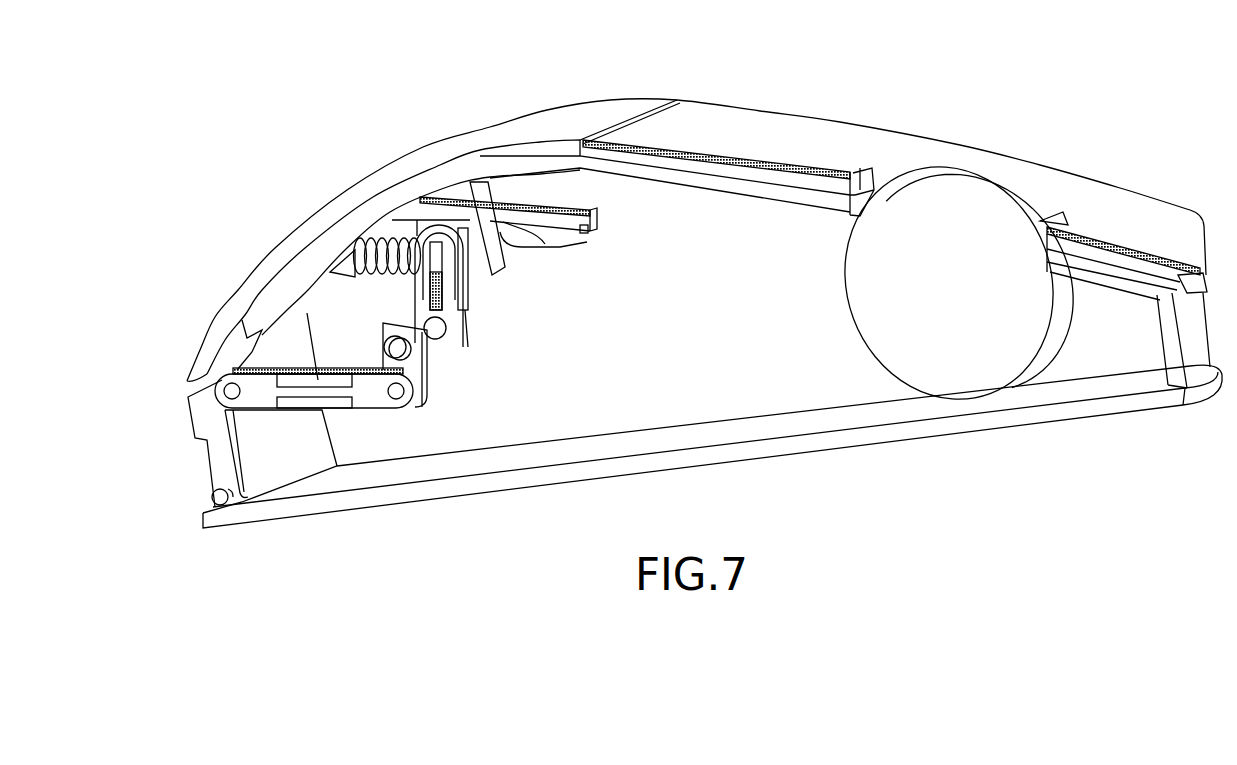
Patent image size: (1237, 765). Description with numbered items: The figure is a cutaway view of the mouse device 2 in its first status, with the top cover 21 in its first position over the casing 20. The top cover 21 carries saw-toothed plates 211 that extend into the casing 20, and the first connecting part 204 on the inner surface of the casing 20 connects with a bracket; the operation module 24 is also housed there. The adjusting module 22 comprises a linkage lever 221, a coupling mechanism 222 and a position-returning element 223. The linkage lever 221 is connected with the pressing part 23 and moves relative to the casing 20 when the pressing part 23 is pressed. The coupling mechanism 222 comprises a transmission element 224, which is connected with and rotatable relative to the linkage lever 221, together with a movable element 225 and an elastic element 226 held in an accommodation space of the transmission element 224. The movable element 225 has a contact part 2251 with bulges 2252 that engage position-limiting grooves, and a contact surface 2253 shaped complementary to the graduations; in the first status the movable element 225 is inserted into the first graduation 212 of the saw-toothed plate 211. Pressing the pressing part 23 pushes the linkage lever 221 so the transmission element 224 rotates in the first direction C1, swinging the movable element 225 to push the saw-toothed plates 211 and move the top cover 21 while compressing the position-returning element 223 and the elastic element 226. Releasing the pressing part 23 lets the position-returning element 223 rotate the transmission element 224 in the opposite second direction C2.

The mouse device 2 is at (960, 58).
The casing 20 is at (1087, 391).
The top cover 21 is at (251, 276).
The adjusting module 22 is at (412, 267).
The pressing part 23 is at (217, 453).
The operation module 24 is at (991, 167).
The first connecting part 204 is at (508, 203).
The saw-toothed plate 211 is at (586, 232).
The first graduation 212 is at (493, 157).
The linkage lever 221 is at (317, 393).
The coupling mechanism 222 is at (412, 262).
The position-returning element 223 is at (400, 225).
The transmission element 224 is at (418, 370).
The movable element 225 is at (485, 230).
The elastic element 226 is at (365, 232).
The contact part 2251 is at (440, 228).
The bulge 2252 is at (428, 215).
The contact surface 2253 is at (458, 222).
The first direction C1 is at (401, 320).
The second direction C2 is at (370, 352).